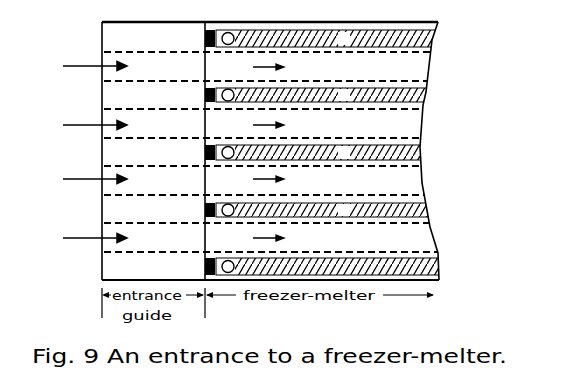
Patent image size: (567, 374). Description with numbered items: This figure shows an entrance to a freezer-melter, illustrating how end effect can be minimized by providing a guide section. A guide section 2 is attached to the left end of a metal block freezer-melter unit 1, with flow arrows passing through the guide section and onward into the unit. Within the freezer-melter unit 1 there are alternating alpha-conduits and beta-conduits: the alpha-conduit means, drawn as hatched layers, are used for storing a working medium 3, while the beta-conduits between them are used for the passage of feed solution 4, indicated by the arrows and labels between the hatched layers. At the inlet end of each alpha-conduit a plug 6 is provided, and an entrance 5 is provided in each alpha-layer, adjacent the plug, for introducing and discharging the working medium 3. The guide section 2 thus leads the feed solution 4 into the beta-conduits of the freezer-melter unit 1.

The metal block freezer-melter unit 1 is at (318, 30).
The guide section 2 is at (136, 37).
The working medium 3 is at (424, 92).
The feed solution 4 is at (415, 182).
The entrance 5 is at (228, 31).
The plug 6 is at (210, 30).